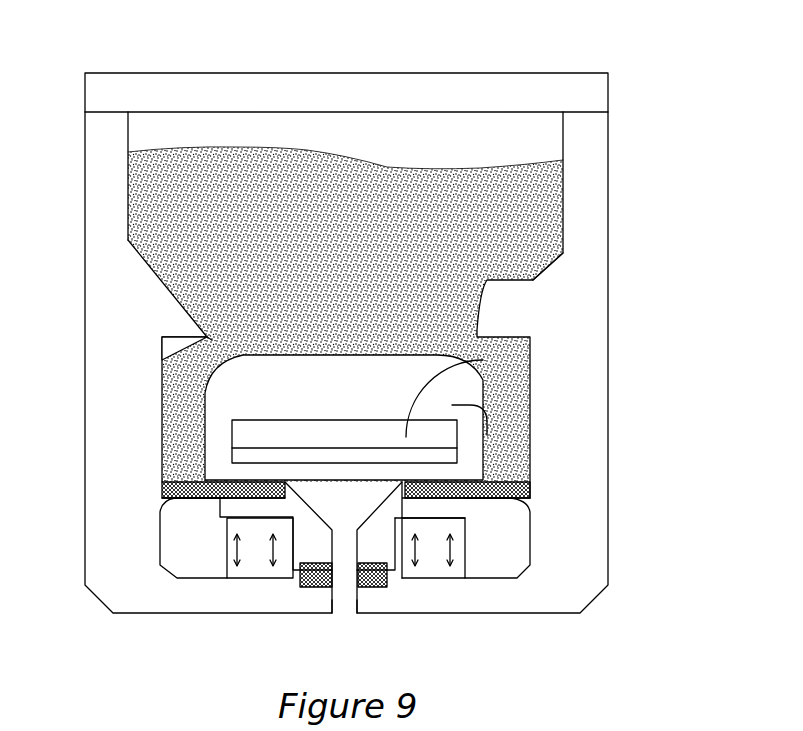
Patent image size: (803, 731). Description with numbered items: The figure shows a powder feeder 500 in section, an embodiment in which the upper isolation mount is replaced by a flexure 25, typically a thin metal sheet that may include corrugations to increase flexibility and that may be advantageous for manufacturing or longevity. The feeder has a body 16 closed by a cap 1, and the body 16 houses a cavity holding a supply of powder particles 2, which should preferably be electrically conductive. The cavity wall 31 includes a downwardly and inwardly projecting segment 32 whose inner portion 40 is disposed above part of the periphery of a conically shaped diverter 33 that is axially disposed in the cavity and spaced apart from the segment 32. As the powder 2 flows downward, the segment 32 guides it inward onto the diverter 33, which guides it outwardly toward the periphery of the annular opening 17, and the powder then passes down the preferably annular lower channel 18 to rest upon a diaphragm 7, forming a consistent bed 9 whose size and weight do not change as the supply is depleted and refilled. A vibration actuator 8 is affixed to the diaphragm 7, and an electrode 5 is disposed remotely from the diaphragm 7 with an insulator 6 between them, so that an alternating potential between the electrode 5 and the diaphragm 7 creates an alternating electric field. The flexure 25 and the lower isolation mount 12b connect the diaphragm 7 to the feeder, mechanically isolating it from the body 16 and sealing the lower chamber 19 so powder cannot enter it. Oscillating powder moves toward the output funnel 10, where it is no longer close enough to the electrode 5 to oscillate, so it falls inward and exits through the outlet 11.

The powder feeder 500 is at (663, 120).
The cap 1 is at (110, 83).
The powder particles 2 is at (132, 147).
The cavity wall 31 is at (128, 197).
The downwardly and inwardly projecting segment 32 is at (150, 266).
The inner portion 40 is at (210, 337).
The diverter 33 is at (175, 357).
The annular opening 17 is at (533, 280).
The body 16 is at (597, 190).
The electrode 5 is at (453, 353).
The insulator 6 is at (487, 403).
The lower channel 18 is at (528, 447).
The flexure 25 is at (215, 497).
The lower chamber 19 is at (170, 548).
The vibration actuator 8 is at (257, 567).
The bed 9 is at (247, 497).
The diaphragm 7 is at (430, 510).
The output funnel 10 is at (373, 527).
The lower isolation mount 12b is at (377, 587).
The outlet 11 is at (343, 605).